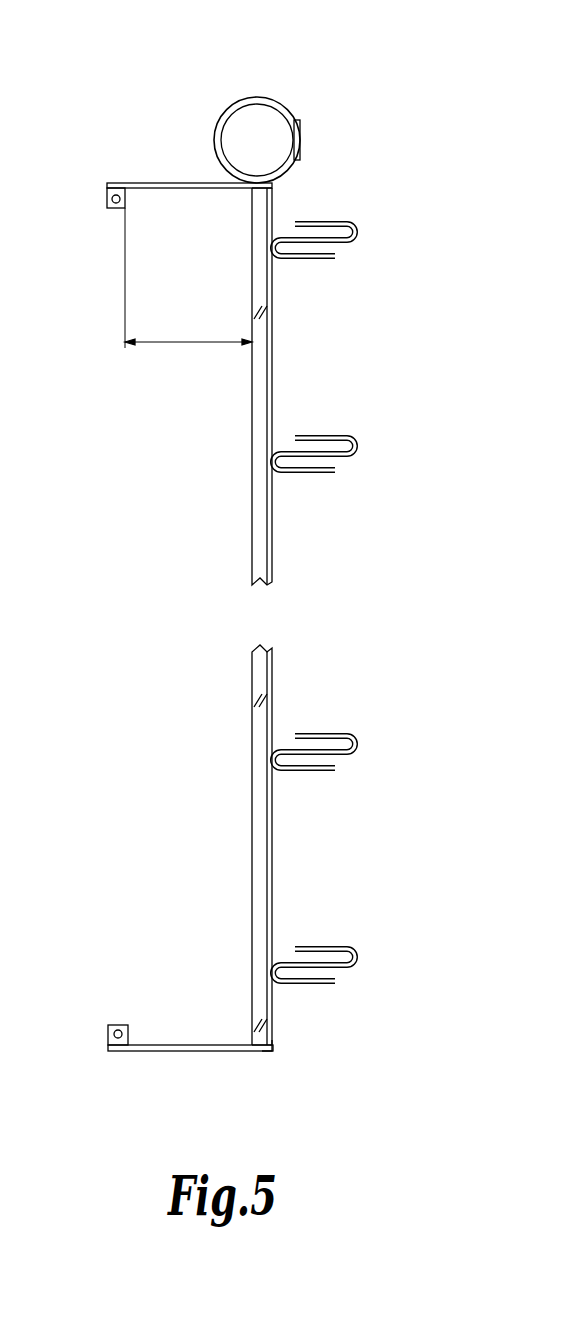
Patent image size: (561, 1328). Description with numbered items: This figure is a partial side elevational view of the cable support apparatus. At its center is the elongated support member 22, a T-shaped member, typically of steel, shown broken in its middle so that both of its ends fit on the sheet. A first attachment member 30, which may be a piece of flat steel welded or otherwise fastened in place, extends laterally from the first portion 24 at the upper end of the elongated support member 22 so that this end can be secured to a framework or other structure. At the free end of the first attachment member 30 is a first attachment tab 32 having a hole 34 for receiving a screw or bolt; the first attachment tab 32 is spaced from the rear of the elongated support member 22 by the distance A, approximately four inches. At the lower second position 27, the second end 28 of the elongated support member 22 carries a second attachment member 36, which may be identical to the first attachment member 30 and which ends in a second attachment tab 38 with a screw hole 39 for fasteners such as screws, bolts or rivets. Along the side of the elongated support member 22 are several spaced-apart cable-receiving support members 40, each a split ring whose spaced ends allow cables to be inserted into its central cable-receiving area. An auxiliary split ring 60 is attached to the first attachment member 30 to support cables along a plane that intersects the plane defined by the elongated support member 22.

The elongated support member 22 is at (258, 722).
The first portion of the elongated support member 24 is at (240, 195).
The second position along the elongated support member 27 is at (243, 1034).
The second end of the elongated support member 28 is at (287, 1050).
The first attachment member 30 is at (170, 183).
The first attachment tab 32 is at (126, 192).
The hole 34 is at (116, 206).
The second attachment member 36 is at (186, 1052).
The second attachment tab 38 is at (118, 1024).
The screw hole 39 is at (108, 1037).
The cable-receiving support member 40 is at (370, 233).
The auxiliary split ring 60 is at (268, 95).
The distance between first attachment tab and rear of elongated support member A is at (187, 344).